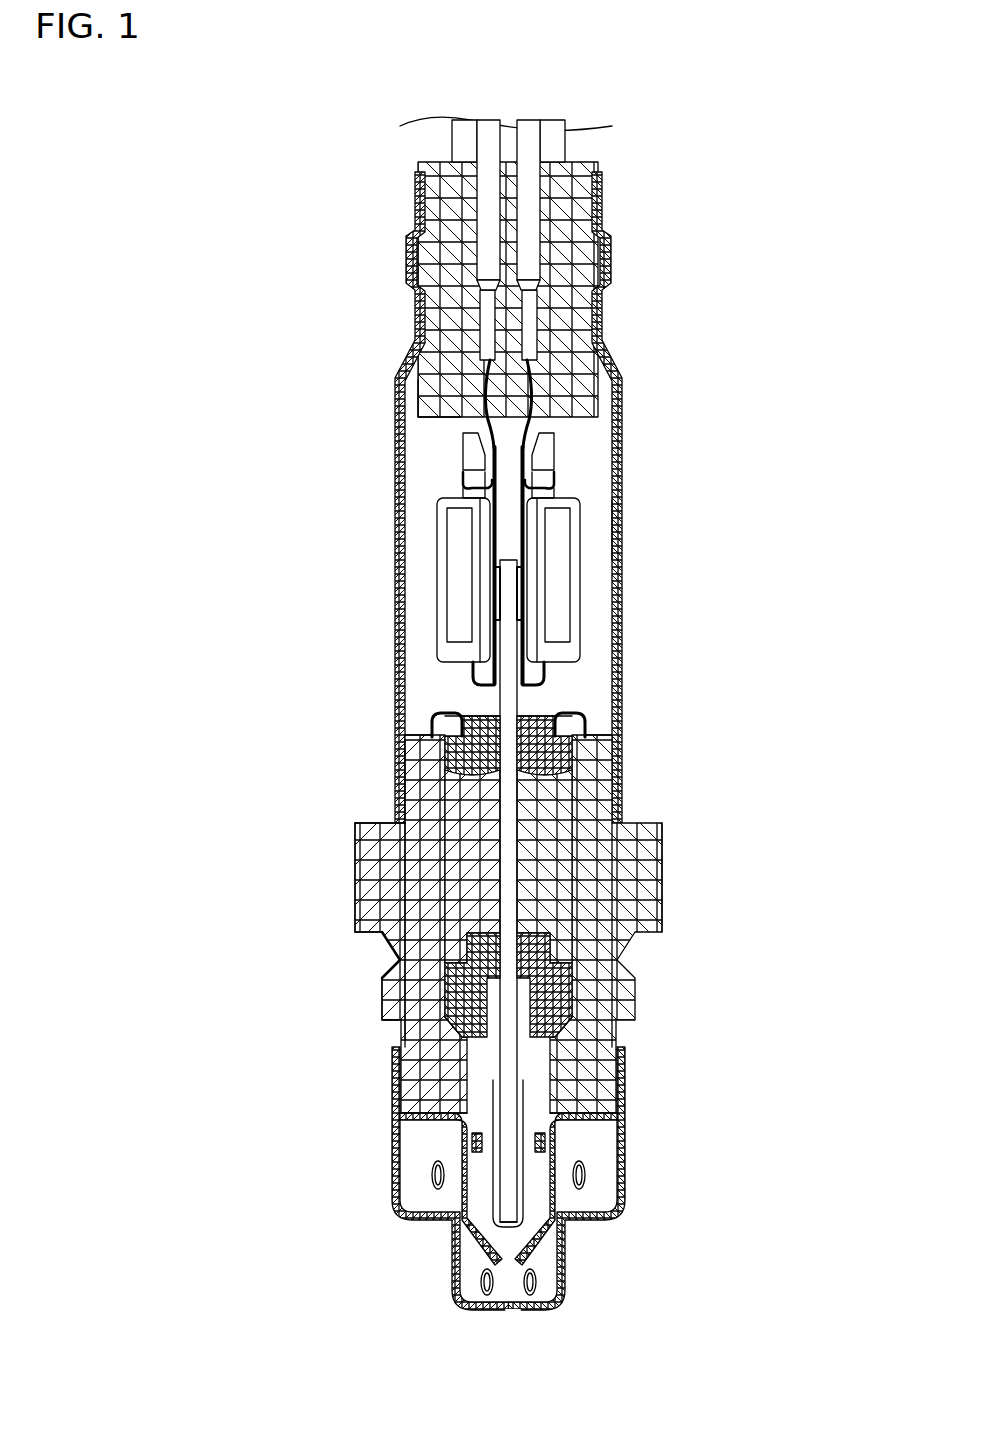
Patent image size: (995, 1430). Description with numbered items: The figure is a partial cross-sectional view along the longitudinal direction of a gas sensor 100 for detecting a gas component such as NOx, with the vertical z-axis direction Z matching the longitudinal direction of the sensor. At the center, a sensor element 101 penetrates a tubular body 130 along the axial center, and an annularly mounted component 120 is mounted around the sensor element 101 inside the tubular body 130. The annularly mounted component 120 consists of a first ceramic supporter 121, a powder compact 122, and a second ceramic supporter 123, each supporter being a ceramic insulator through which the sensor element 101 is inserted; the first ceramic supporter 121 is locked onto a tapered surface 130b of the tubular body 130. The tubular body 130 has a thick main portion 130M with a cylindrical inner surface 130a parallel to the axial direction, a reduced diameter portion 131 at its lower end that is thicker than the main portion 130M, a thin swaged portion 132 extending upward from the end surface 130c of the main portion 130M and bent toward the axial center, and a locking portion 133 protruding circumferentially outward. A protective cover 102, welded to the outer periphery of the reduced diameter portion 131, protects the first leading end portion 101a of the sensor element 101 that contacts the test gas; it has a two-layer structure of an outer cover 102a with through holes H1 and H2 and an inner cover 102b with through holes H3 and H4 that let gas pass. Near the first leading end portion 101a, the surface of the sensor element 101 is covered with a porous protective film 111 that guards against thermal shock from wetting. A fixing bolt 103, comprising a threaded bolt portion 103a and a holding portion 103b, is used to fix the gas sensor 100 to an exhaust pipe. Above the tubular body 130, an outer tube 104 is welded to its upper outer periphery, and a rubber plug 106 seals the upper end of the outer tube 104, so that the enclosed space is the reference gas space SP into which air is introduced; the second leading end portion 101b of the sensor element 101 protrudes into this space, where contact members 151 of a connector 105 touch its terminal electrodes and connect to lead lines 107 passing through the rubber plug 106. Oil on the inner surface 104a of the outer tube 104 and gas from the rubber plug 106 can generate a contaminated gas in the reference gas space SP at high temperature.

The gas sensor 100 is at (250, 218).
The sensor element 101 is at (508, 1052).
The first leading end portion 101a is at (507, 1228).
The second leading end portion 101b is at (507, 552).
The protective cover 102 is at (419, 1178).
The outer cover 102a is at (400, 1200).
The inner cover 102b is at (463, 1148).
The fixing bolt 103 is at (270, 886).
The bolt portion 103a is at (383, 990).
The holding portion 103b is at (368, 902).
The outer tube 104 is at (400, 449).
The inner surface of outer tube 104a is at (624, 532).
The connector 105 is at (437, 570).
The rubber plug 106 is at (437, 386).
The lead lines 107 is at (487, 205).
The protective film 111 is at (492, 1192).
The annularly mounted component 120 is at (727, 757).
The first ceramic supporter 121 is at (545, 952).
The powder compact 122 is at (560, 803).
The second ceramic supporter 123 is at (556, 751).
The tubular body 130 is at (615, 965).
The cylindrical inner surface 130a is at (447, 860).
The tapered surface 130b is at (572, 1016).
The end surface 130c is at (593, 733).
The main portion 130M is at (425, 860).
The reduced diameter portion 131 is at (582, 1087).
The swaged portion 132 is at (575, 700).
The locking portion 133 is at (390, 1030).
The contact members 151 is at (475, 690).
The reference gas space SP is at (588, 487).
The through holes H1 is at (537, 1280).
The through holes H2 is at (583, 1173).
The through holes H3 is at (470, 1138).
The through holes H4 is at (513, 1300).
The z-axis direction Z is at (120, 1190).